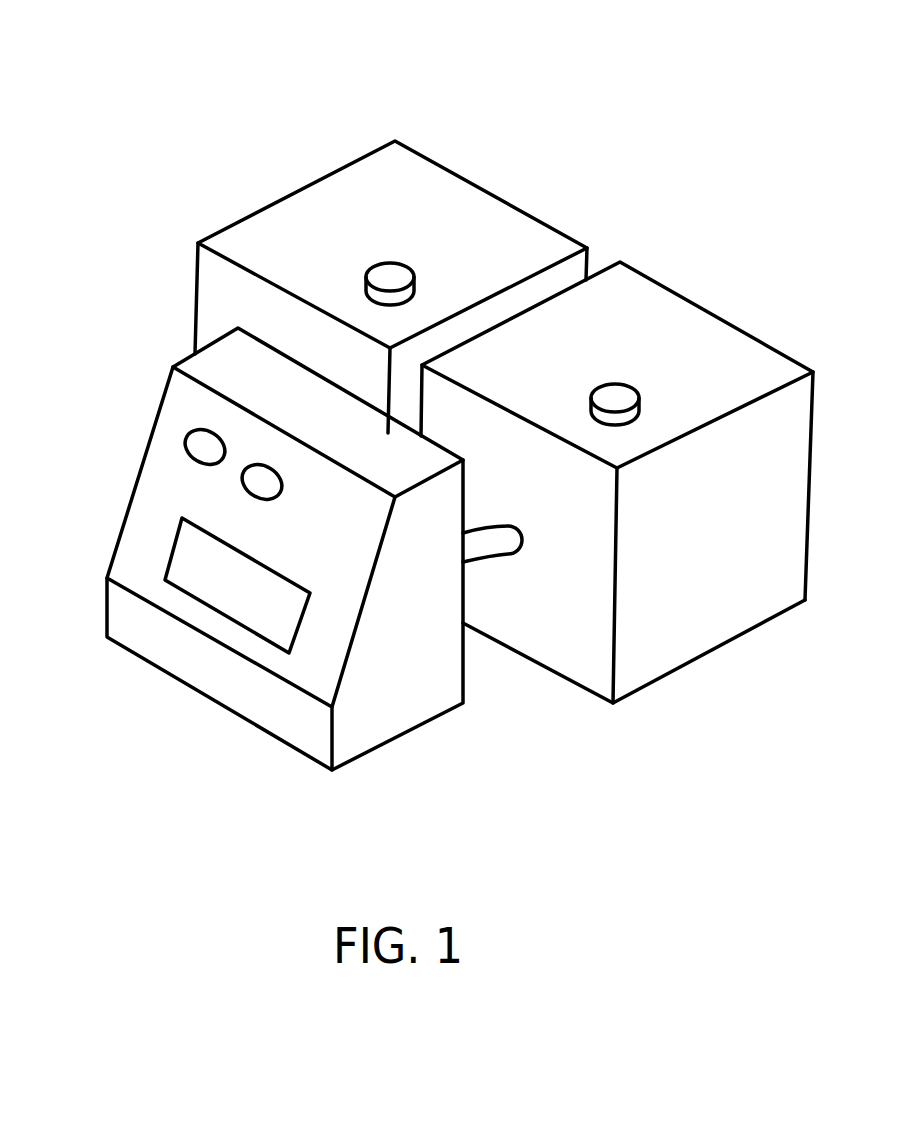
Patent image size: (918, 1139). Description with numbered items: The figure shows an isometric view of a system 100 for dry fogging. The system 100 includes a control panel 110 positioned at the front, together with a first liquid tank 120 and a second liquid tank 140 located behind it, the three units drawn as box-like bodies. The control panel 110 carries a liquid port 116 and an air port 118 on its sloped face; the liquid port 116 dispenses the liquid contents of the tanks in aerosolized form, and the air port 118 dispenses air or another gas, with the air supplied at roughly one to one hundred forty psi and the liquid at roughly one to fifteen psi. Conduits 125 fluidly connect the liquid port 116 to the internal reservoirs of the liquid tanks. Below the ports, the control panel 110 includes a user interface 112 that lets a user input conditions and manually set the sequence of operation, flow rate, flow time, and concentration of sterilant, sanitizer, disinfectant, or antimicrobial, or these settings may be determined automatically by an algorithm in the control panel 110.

The system for dry fogging 100 is at (193, 60).
The control panel 110 is at (277, 703).
The user interface 112 is at (200, 602).
The liquid port 116 is at (187, 430).
The air port 118 is at (240, 475).
The first liquid tank 120 is at (279, 170).
The conduits 125 is at (483, 543).
The second liquid tank 140 is at (667, 274).